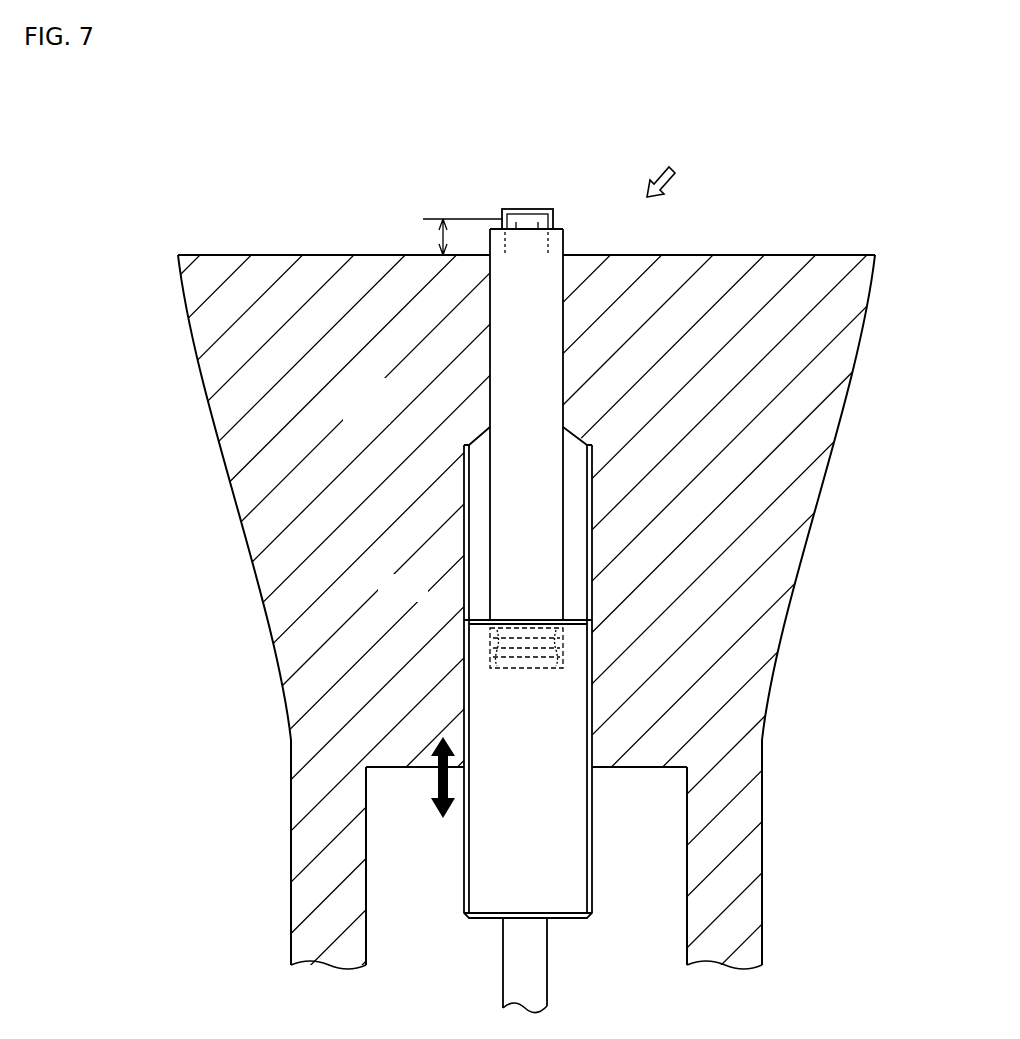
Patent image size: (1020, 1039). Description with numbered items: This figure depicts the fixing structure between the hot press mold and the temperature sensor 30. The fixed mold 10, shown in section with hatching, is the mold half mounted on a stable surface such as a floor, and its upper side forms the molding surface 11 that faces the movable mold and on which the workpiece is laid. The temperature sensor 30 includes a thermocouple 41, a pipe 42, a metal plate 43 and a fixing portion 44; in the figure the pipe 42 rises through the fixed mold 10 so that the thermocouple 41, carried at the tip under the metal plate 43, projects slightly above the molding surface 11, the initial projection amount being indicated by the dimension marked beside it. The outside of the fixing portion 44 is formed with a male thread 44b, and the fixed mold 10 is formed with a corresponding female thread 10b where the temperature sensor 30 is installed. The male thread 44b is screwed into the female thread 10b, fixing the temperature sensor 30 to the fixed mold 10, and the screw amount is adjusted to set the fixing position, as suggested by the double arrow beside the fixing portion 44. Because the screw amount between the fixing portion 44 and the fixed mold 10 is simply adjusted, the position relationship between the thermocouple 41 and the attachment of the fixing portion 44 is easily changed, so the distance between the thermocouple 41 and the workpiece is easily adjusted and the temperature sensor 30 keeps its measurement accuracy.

The fixed mold 10 is at (382, 418).
The female thread 10b is at (466, 578).
The molding surface 11 is at (315, 243).
The temperature sensor 30 is at (677, 170).
The thermocouple 41 is at (524, 226).
The pipe 42 is at (545, 383).
The metal plate 43 is at (538, 210).
The fixing portion 44 is at (544, 784).
The male thread 44b is at (465, 685).